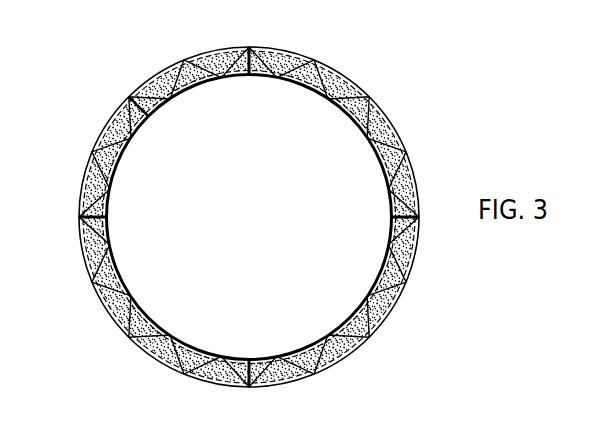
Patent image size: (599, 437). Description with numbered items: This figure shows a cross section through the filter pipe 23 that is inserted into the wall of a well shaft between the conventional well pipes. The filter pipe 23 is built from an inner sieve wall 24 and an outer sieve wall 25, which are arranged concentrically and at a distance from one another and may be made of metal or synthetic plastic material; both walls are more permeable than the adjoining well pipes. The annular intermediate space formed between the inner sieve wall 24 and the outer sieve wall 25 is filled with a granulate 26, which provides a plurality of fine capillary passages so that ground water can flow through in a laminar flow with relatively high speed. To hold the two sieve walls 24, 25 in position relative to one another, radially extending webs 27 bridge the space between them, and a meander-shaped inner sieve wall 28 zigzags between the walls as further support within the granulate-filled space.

The filter pipe 23 is at (362, 74).
The inner sieve wall 24 is at (389, 247).
The outer sieve wall 25 is at (390, 127).
The granulate 26 is at (330, 328).
The radially extending webs 27 is at (251, 46).
The meander-shaped inner sieve wall 28 is at (133, 98).